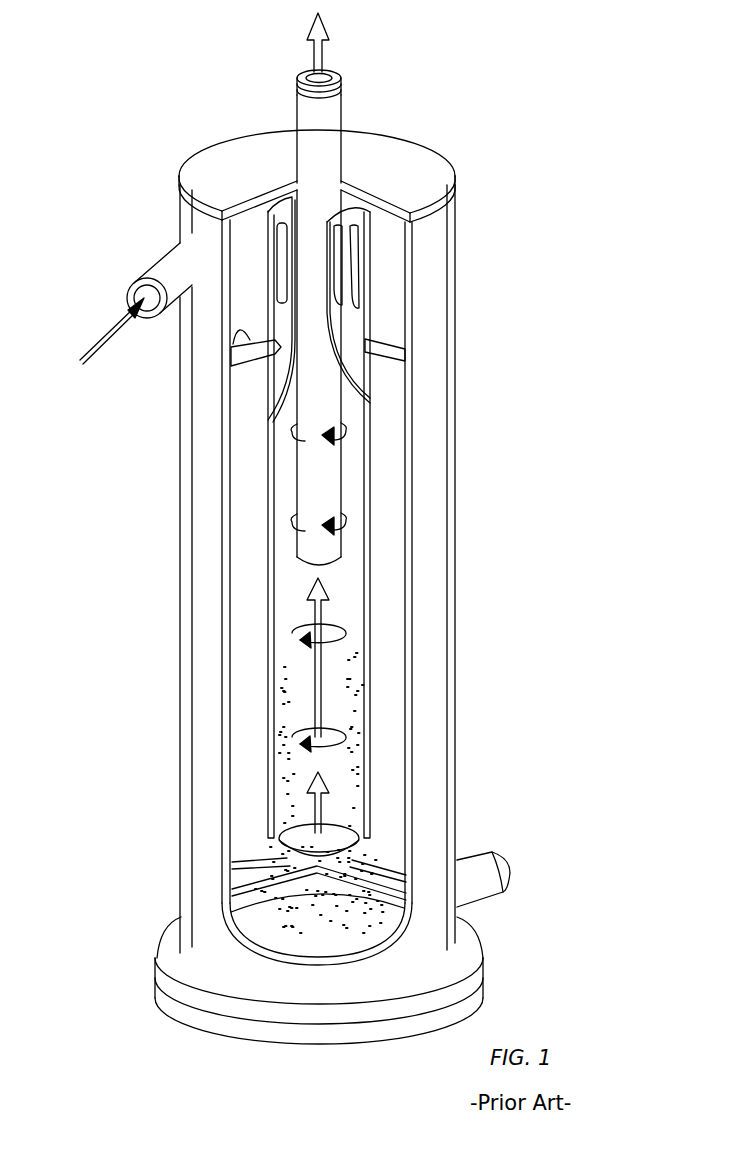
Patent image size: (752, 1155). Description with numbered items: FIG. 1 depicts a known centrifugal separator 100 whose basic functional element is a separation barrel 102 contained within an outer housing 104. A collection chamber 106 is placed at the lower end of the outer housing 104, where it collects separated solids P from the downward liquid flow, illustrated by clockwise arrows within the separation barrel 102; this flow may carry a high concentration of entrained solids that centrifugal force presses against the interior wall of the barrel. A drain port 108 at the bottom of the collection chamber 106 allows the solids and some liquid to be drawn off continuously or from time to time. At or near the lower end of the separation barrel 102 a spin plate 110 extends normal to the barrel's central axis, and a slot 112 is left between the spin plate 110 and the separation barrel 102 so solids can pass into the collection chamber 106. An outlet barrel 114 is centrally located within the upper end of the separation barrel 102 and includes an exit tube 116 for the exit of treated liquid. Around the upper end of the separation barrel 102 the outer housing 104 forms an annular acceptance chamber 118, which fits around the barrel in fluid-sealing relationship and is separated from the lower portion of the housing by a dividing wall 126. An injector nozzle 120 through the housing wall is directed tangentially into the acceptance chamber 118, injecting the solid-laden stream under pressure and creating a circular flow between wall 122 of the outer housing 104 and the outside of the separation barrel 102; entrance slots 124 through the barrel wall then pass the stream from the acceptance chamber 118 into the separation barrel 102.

The centrifugal separator 100 is at (130, 160).
The separation barrel 102 is at (370, 472).
The outer housing 104 is at (450, 639).
The collection chamber 106 is at (297, 944).
The drain port 108 is at (510, 870).
The spin plate 110 is at (341, 834).
The slot 112 is at (267, 851).
The outlet barrel 114 is at (338, 540).
The exit tube 116 is at (337, 104).
The acceptance chamber 118 is at (388, 276).
The injector nozzle 120 is at (140, 297).
The wall 122 is at (243, 347).
The entrance slots 124 is at (360, 250).
The dividing wall 126 is at (392, 347).
The separated solids P is at (353, 707).